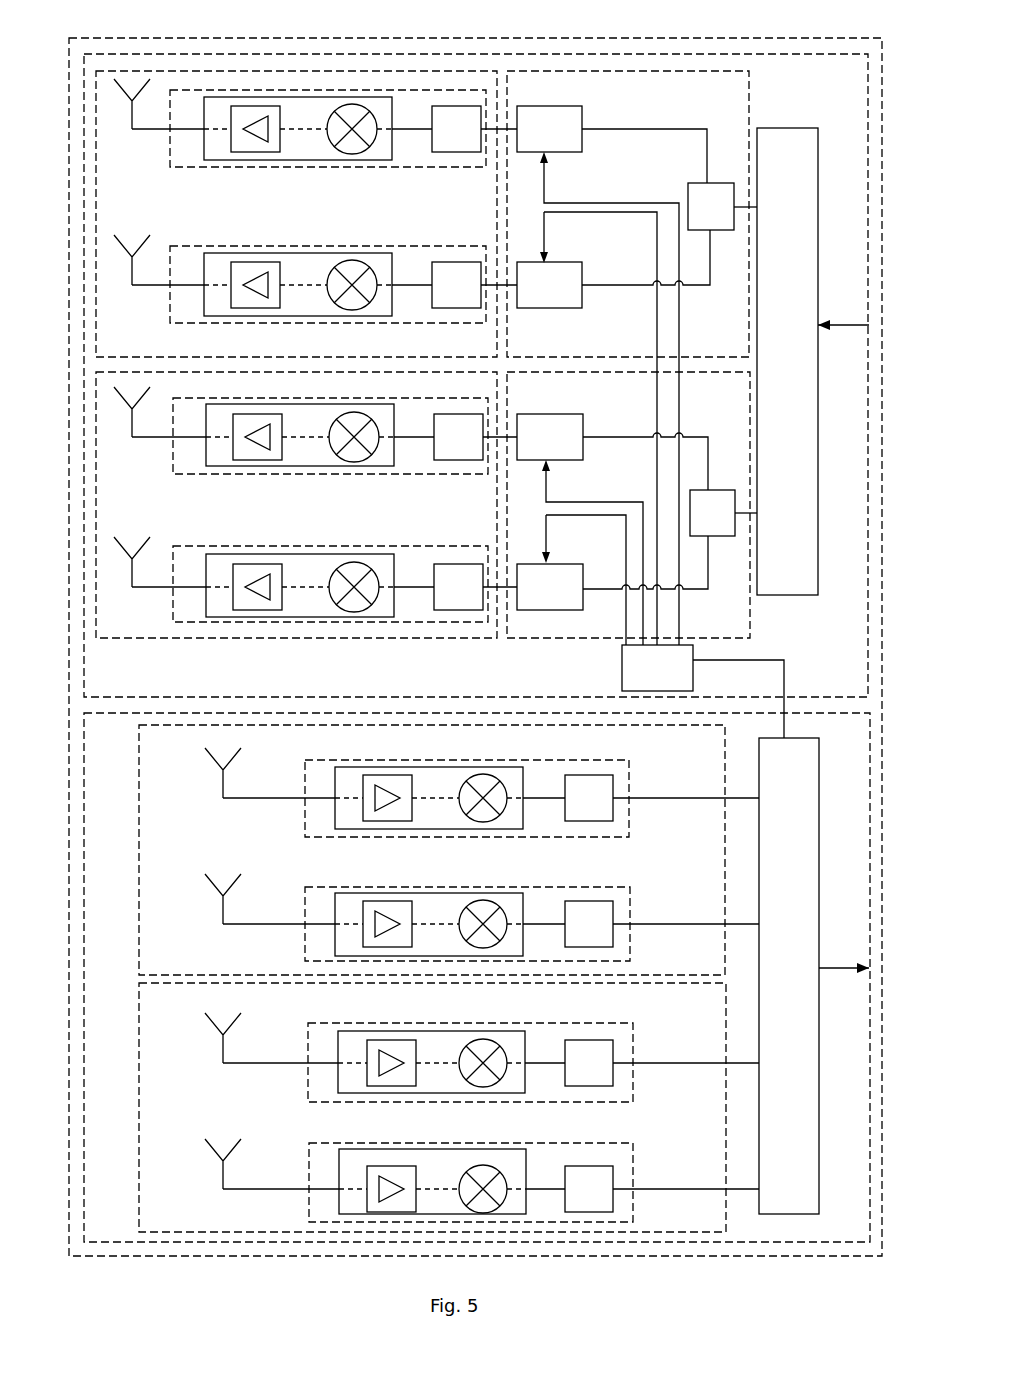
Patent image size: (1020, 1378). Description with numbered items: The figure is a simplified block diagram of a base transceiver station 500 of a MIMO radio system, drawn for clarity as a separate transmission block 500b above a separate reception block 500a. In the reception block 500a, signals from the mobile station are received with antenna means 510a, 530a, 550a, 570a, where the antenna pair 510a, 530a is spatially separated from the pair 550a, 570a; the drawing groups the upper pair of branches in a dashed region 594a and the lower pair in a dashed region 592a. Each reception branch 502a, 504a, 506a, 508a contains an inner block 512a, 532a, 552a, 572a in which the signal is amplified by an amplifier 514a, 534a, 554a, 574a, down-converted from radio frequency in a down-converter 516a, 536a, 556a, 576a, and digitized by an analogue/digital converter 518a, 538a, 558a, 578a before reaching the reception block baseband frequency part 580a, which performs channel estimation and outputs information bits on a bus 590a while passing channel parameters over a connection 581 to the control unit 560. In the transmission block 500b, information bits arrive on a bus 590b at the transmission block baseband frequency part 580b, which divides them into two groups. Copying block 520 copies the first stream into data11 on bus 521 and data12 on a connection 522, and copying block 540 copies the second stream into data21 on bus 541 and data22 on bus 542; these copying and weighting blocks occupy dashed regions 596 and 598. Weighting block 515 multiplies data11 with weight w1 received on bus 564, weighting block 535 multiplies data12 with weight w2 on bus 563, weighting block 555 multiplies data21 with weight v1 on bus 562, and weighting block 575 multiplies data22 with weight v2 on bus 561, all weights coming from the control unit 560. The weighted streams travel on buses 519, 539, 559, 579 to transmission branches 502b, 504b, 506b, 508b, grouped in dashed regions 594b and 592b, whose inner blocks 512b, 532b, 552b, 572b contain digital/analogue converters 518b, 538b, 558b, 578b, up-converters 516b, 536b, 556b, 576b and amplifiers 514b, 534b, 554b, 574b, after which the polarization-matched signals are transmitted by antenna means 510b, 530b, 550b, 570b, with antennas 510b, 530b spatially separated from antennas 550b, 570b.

The base transceiver station 500 is at (143, 1257).
The transmission block 500b is at (84, 683).
The reception block 500a is at (84, 742).
The first transmit chain group 594b is at (228, 71).
The second transmit chain group 592b is at (265, 638).
The first weighting/combining section 596 is at (637, 71).
The second weighting/combining section 598 is at (581, 638).
The first receive chain group 594a is at (139, 962).
The second receive chain group 592a is at (138, 993).
The antenna means 510b is at (132, 113).
The transmission branch 502b is at (170, 137).
The RF transmit block 512b is at (203, 150).
The amplifier 514b is at (265, 153).
The up-converter 516b is at (352, 154).
The digital/analogue converter 518b is at (465, 153).
The bus 519 is at (510, 122).
The weighting block 515 is at (582, 115).
The bus 521 is at (650, 129).
The copying block 520 is at (698, 182).
The bus 564 is at (563, 203).
The bus 563 is at (592, 212).
The antenna means 530b is at (132, 269).
The transmission branch 504b is at (169, 295).
The RF transmit block 532b is at (203, 303).
The amplifier 534b is at (270, 309).
The up-converter 536b is at (350, 310).
The digital/analogue converter 538b is at (465, 309).
The bus 539 is at (512, 290).
The weighting block 535 is at (582, 292).
The combiner input line 522 is at (703, 287).
The transmission block baseband frequency part 580b is at (790, 128).
The bus 590b is at (850, 325).
The antenna means 550b is at (132, 421).
The transmission branch 506b is at (173, 446).
The RF transmit block 552b is at (206, 455).
The amplifier 554b is at (274, 461).
The up-converter 556b is at (352, 462).
The digital/analogue converter 558b is at (468, 461).
The bus 559 is at (512, 432).
The weighting block 555 is at (585, 430).
The bus 541 is at (687, 434).
The copying block 540 is at (713, 537).
The bus 562 is at (572, 500).
The bus 561 is at (583, 517).
The antenna means 570b is at (132, 571).
The transmission branch 508b is at (183, 546).
The RF transmit block 572b is at (206, 617).
The amplifier 574b is at (258, 564).
The up-converter 576b is at (348, 562).
The digital/analogue converter 578b is at (450, 564).
The bus 579 is at (512, 592).
The weighting block 575 is at (585, 597).
The bus 542 is at (700, 594).
The control unit 560 is at (693, 667).
The controller feedback line 581 is at (770, 658).
The antenna means 510a is at (222, 787).
The reception branch 502a is at (304, 797).
The RF receive block 512a is at (335, 782).
The amplifier 514a is at (402, 775).
The down-converter 516a is at (486, 774).
The analogue/digital converter 518a is at (595, 775).
The reception block baseband frequency part 580a is at (820, 743).
The bus 590a is at (843, 968).
The antenna means 530a is at (222, 913).
The reception branch 504a is at (305, 921).
The RF receive block 532a is at (335, 908).
The amplifier 534a is at (400, 901).
The down-converter 536a is at (485, 900).
The analogue/digital converter 538a is at (595, 901).
The antenna means 550a is at (222, 1052).
The reception branch 506a is at (308, 1048).
The RF receive block 552a is at (338, 1048).
The amplifier 554a is at (403, 1040).
The down-converter 556a is at (485, 1039).
The analogue/digital converter 558a is at (595, 1040).
The antenna means 570a is at (222, 1175).
The reception branch 508a is at (309, 1170).
The RF receive block 572a is at (339, 1172).
The amplifier 574a is at (403, 1166).
The down-converter 576a is at (485, 1165).
The analogue/digital converter 578a is at (595, 1166).